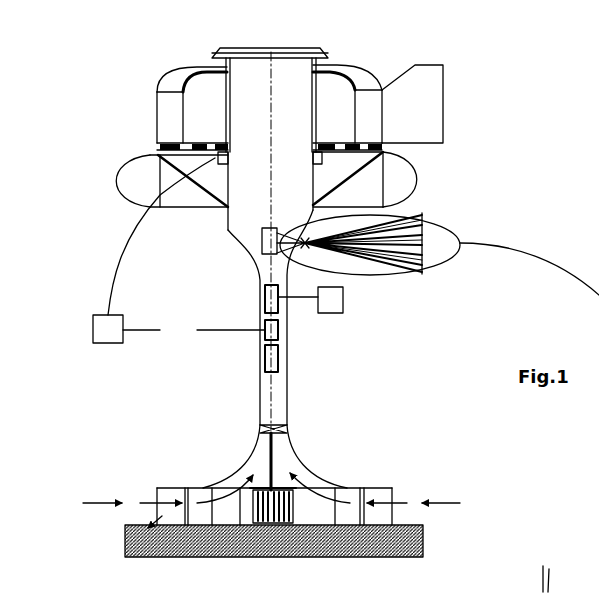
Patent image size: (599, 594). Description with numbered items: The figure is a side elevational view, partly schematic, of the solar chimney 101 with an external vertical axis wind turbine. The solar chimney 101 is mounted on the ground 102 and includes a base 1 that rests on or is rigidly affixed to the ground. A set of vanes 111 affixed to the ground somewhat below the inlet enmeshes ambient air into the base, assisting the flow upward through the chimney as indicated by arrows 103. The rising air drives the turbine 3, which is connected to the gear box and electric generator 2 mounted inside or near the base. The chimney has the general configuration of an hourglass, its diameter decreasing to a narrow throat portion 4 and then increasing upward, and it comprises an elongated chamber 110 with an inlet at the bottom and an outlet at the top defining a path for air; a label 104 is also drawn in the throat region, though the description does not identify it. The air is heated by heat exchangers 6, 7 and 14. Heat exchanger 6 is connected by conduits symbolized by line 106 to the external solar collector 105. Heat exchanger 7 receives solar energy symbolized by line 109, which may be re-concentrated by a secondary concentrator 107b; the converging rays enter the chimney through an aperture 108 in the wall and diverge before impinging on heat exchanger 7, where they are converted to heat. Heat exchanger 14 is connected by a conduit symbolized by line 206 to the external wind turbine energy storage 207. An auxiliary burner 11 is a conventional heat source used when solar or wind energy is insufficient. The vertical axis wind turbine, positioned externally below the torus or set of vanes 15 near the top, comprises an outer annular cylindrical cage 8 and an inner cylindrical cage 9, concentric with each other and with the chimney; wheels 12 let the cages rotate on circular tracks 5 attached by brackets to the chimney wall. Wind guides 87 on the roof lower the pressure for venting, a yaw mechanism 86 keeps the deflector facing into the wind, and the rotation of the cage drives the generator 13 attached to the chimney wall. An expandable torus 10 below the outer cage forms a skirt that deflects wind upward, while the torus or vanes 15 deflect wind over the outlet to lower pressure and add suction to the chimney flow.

The base 1 is at (375, 492).
The gear box and electric generator 2 is at (308, 500).
The turbine 3 is at (293, 426).
The throat portion 4 is at (262, 403).
The circular tracks and brackets 5 is at (202, 190).
The heat exchanger 6 is at (265, 307).
The heat exchanger 7 is at (237, 241).
The outer annular cylindrical cage 8 is at (162, 104).
The inner cylindrical cage 9 is at (347, 107).
The expandable torus 10 is at (148, 184).
The auxiliary burner 11 is at (265, 355).
The wheels 12 is at (403, 150).
The generator 13 is at (228, 165).
The heat exchanger 14 is at (278, 332).
The torus or set of vanes 15 is at (316, 47).
The yaw mechanism 86 is at (412, 104).
The wind guide 87 is at (176, 68).
The solar chimney 101 is at (372, 353).
The ground 102 is at (412, 543).
The arrows 103 is at (103, 500).
The axis 104 is at (272, 273).
The external solar collector 105 is at (343, 300).
The line 106 is at (297, 300).
The secondary concentrator 107b is at (312, 235).
The aperture 108 is at (308, 247).
The line 109 is at (372, 262).
The elongated chamber 110 is at (287, 388).
The set of vanes 111 is at (125, 540).
The line 206 is at (194, 327).
The wind turbine energy storage 207 is at (93, 330).